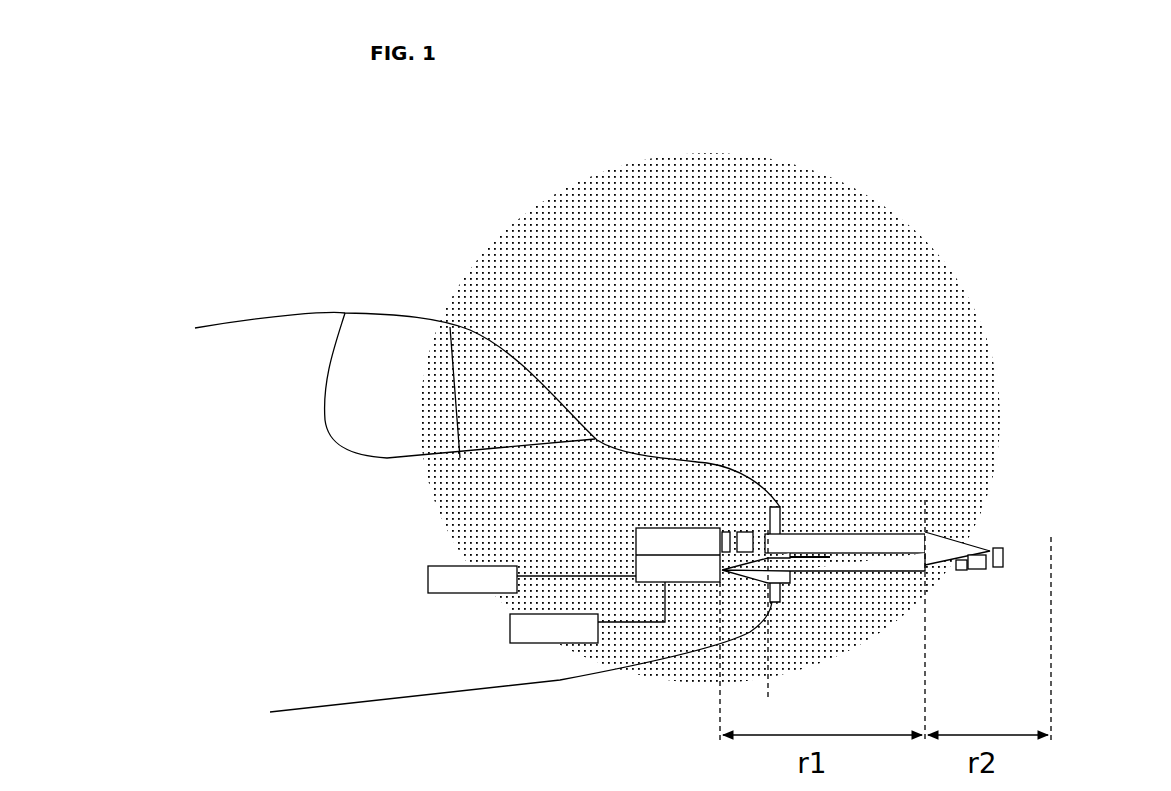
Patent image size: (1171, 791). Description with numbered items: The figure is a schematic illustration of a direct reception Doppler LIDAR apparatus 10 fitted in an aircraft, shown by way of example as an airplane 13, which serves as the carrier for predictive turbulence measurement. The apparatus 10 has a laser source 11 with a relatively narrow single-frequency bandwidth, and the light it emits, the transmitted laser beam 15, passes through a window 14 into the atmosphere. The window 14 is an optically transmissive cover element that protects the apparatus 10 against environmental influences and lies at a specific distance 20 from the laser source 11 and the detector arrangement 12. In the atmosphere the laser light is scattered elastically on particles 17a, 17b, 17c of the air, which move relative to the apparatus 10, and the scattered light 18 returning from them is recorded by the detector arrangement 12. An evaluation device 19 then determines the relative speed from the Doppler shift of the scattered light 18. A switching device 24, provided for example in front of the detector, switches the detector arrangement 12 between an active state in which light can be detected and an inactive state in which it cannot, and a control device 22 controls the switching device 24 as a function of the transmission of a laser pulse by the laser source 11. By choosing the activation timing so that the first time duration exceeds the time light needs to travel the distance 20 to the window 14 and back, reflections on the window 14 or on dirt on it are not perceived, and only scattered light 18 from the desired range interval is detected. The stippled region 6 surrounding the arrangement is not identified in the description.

The measurement region 6 is at (857, 167).
The direct reception Doppler LIDAR apparatus 10 is at (872, 315).
The laser source 11 is at (668, 528).
The detector arrangement 12 is at (660, 583).
The airplane 13 is at (655, 457).
The window 14 is at (780, 590).
The transmitted laser beam 15 is at (848, 535).
The particle 17a is at (990, 538).
The particle 17b is at (1012, 553).
The particle 17c is at (1013, 565).
The scattered light 18 is at (885, 563).
The evaluation device 19 is at (450, 575).
The distance 20 is at (766, 697).
The control device 22 is at (522, 648).
The switching device 24 is at (692, 618).